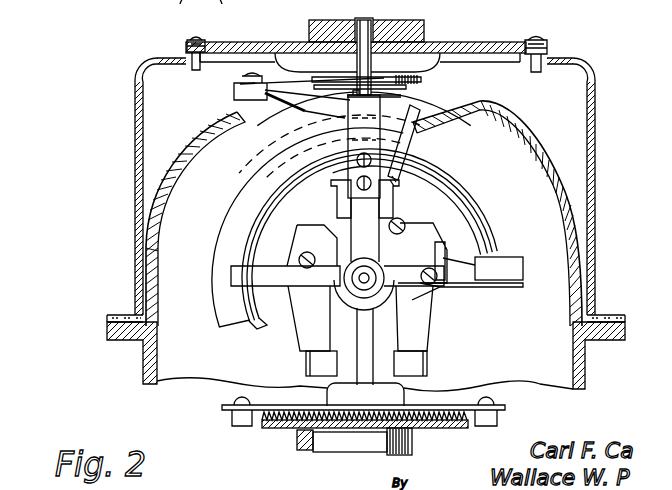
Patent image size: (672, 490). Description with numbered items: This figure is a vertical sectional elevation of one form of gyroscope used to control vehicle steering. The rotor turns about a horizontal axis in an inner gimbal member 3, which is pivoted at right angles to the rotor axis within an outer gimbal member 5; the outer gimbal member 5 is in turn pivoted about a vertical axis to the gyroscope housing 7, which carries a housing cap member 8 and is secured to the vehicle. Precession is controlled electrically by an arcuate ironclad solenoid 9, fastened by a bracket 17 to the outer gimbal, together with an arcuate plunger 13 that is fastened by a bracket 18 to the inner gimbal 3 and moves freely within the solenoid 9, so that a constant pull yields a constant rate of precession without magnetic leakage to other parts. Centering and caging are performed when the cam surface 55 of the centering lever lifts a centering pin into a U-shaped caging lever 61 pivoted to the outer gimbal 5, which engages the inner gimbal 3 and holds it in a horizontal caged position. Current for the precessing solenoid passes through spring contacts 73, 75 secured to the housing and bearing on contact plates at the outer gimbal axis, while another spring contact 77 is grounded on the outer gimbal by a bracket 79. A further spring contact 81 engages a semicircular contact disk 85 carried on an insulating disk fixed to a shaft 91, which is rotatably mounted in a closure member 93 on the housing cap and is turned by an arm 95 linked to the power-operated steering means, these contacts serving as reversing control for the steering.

The inner gimbal member 3 is at (436, 224).
The outer gimbal member 5 is at (338, 332).
The gyroscope housing 7 is at (140, 376).
The housing cap member 8 is at (135, 165).
The ironclad solenoid 9 is at (222, 212).
The arcuate plunger 13 is at (453, 178).
The bracket 17 is at (346, 206).
The bracket 18 is at (516, 258).
The cam surface 55 is at (294, 441).
The caging lever 61 is at (305, 362).
The spring contact 73 is at (275, 115).
The spring contact 75 is at (290, 124).
The spring contact 77 is at (406, 90).
The bracket 79 is at (392, 116).
The spring contact 81 is at (292, 88).
The contact disk 85 is at (432, 48).
The shaft 91 is at (206, 50).
The closure member 93 is at (506, 46).
The arm 95 is at (424, 26).